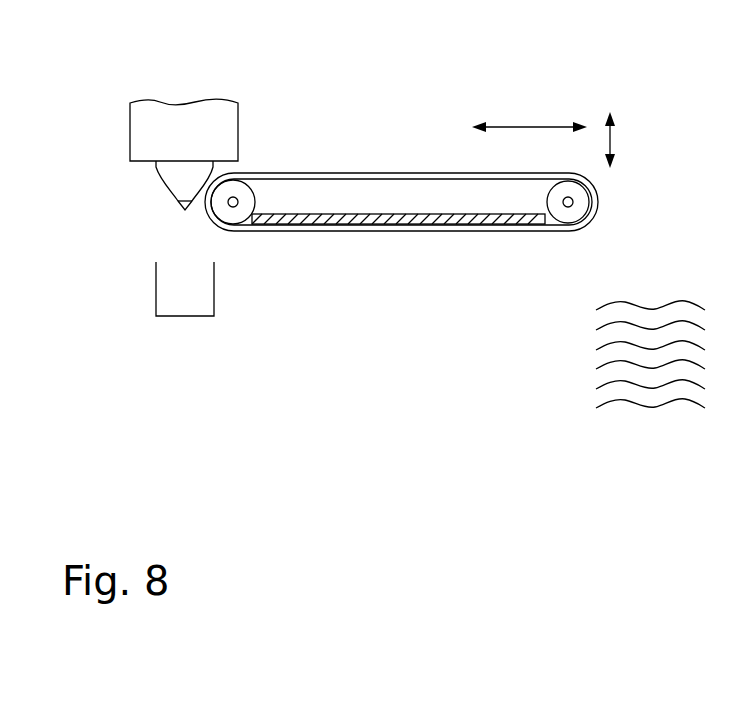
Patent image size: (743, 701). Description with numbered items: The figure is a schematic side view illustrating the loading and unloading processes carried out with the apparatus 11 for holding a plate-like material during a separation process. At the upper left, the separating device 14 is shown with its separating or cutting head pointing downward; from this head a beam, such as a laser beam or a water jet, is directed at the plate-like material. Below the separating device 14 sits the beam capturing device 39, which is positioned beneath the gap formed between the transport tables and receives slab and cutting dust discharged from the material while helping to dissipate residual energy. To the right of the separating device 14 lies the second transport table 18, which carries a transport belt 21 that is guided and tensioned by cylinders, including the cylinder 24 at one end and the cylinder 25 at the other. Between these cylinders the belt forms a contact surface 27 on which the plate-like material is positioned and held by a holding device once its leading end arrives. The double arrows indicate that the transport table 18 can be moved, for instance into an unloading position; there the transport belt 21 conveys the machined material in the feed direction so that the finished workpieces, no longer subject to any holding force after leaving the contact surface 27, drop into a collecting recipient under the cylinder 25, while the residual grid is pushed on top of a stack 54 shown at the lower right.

The apparatus 11 is at (303, 97).
The separating device 14 is at (198, 125).
The transport table 18 is at (405, 148).
The transport belt 21 is at (318, 177).
The cylinder 24 is at (238, 188).
The cylinder 25 is at (578, 208).
The contact surface 27 is at (343, 231).
The beam capturing device 39 is at (175, 318).
The stack 54 is at (608, 370).